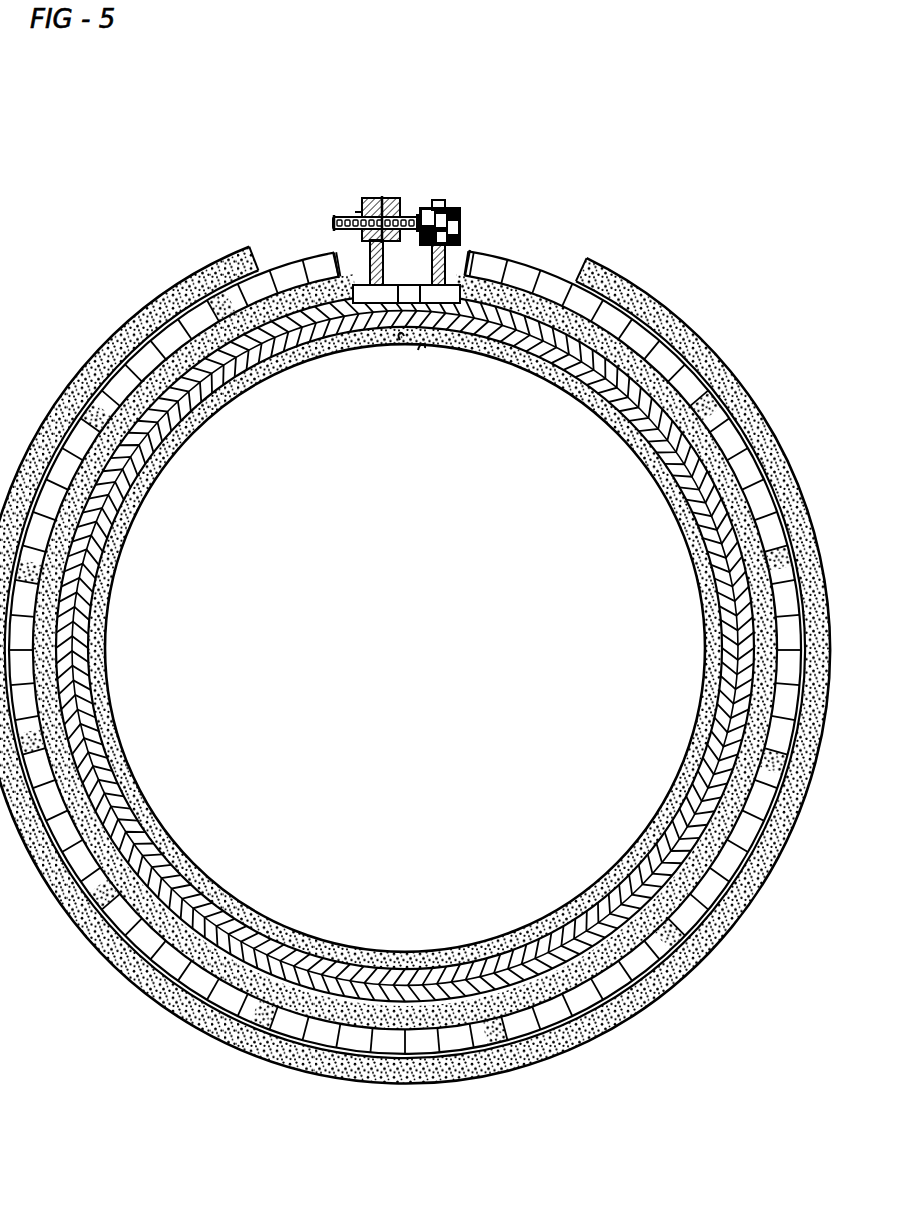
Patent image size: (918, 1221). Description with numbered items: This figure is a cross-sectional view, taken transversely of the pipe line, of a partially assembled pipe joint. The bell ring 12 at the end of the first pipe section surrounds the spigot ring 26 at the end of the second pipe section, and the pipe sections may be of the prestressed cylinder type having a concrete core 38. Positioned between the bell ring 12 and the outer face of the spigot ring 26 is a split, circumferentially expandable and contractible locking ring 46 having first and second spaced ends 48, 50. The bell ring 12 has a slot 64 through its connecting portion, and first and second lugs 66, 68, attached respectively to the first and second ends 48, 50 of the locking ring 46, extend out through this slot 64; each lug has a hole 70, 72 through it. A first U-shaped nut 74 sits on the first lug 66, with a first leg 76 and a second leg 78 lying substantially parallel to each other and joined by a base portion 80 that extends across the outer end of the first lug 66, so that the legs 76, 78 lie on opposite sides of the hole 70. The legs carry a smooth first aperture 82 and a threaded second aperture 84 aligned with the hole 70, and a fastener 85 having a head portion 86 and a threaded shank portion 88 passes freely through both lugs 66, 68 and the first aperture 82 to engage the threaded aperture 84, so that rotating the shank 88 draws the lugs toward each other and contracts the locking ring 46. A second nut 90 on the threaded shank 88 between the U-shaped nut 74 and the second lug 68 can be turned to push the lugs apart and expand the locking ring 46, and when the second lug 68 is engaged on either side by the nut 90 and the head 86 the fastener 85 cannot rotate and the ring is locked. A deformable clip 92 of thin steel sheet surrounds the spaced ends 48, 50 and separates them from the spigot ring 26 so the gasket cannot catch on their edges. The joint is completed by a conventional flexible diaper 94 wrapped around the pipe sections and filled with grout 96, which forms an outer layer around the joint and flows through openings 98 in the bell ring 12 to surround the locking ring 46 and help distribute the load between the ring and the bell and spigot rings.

The bell ring 12 is at (550, 360).
The spigot ring 26 is at (252, 350).
The concrete core 38 is at (497, 345).
The locking ring 46 is at (210, 410).
The first end 48 is at (404, 340).
The second end 50 is at (418, 350).
The slot 64 is at (470, 258).
The first lug 66 is at (333, 252).
The second lug 68 is at (478, 222).
The hole 70 is at (376, 195).
The hole 72 is at (446, 207).
The first U-shaped nut 74 is at (358, 202).
The first leg 76 is at (418, 216).
The second leg 78 is at (355, 212).
The base portion 80 is at (362, 195).
The first aperture 82 is at (398, 195).
The second aperture 84 is at (355, 222).
The fastener 85 is at (468, 220).
The head portion 86 is at (472, 210).
The threaded shank portion 88 is at (332, 228).
The second nut 90 is at (428, 208).
The clip 92 is at (360, 340).
The diaper 94 is at (745, 392).
The grout 96 is at (638, 300).
The openings 98 is at (600, 290).